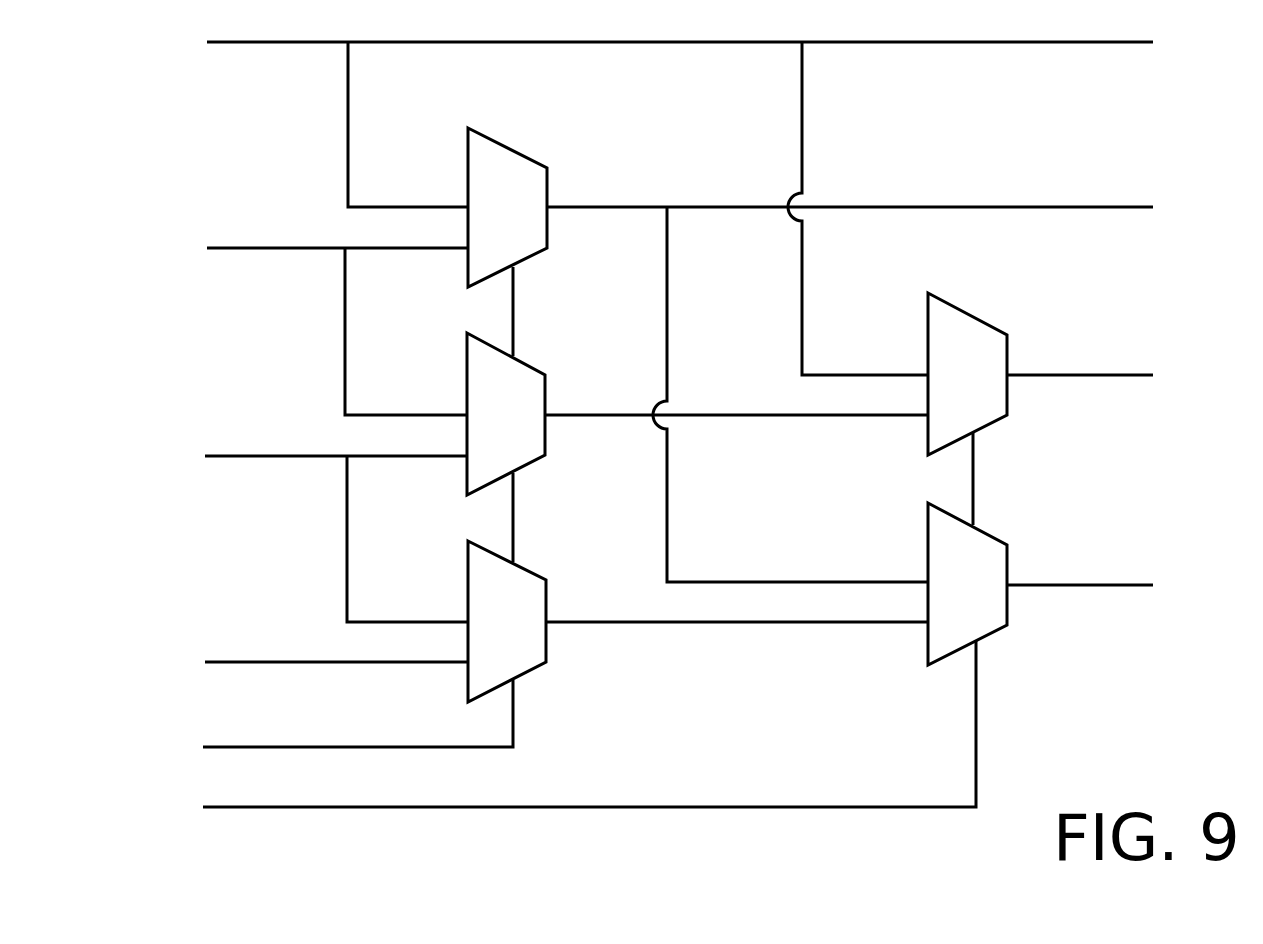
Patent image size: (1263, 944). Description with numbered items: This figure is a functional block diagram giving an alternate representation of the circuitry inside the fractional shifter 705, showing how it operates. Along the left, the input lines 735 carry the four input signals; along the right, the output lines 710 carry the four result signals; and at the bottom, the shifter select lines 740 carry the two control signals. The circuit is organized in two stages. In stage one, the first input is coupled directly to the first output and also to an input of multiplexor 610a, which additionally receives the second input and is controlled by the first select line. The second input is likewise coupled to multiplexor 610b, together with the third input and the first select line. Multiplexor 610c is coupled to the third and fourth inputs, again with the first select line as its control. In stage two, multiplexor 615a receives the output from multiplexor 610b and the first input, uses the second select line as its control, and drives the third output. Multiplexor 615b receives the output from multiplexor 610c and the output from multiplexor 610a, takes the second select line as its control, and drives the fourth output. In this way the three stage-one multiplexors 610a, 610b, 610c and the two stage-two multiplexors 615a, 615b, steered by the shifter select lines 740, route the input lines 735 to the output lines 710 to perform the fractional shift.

The fractional shifter 705 is at (728, 855).
The multiplexor 610a is at (540, 162).
The multiplexor 610b is at (540, 368).
The multiplexor 610c is at (523, 565).
The multiplexor 615a is at (990, 322).
The multiplexor 615b is at (993, 532).
The input lines 735 is at (176, 690).
The shifter select lines 740 is at (201, 845).
The output lines 710 is at (1170, 625).